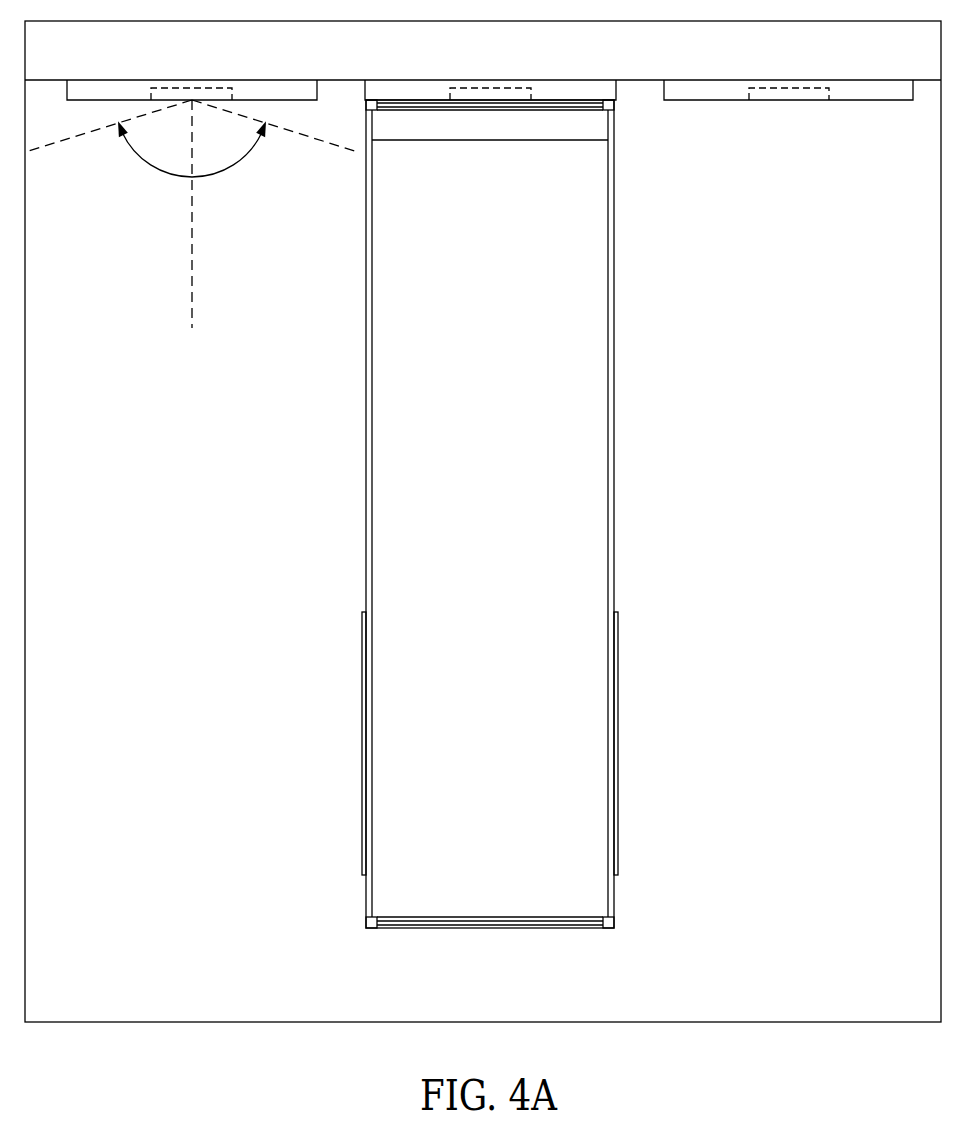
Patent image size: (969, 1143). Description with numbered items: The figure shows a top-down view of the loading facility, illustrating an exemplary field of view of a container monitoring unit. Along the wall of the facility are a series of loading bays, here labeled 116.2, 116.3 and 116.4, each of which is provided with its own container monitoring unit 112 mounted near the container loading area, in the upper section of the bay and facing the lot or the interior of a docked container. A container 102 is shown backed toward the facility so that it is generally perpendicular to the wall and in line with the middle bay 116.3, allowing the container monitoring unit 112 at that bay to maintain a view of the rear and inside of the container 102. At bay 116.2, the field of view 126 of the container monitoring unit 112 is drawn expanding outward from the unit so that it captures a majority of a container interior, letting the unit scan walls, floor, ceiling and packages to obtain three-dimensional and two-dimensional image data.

The container 102 is at (402, 480).
The container monitoring unit 112 is at (192, 86).
The sensor housing / mount 116.2 is at (109, 74).
The sensor housing / mount 116.3 is at (446, 72).
The sensor housing / mount 116.4 is at (747, 71).
The fields of view 126 is at (218, 176).